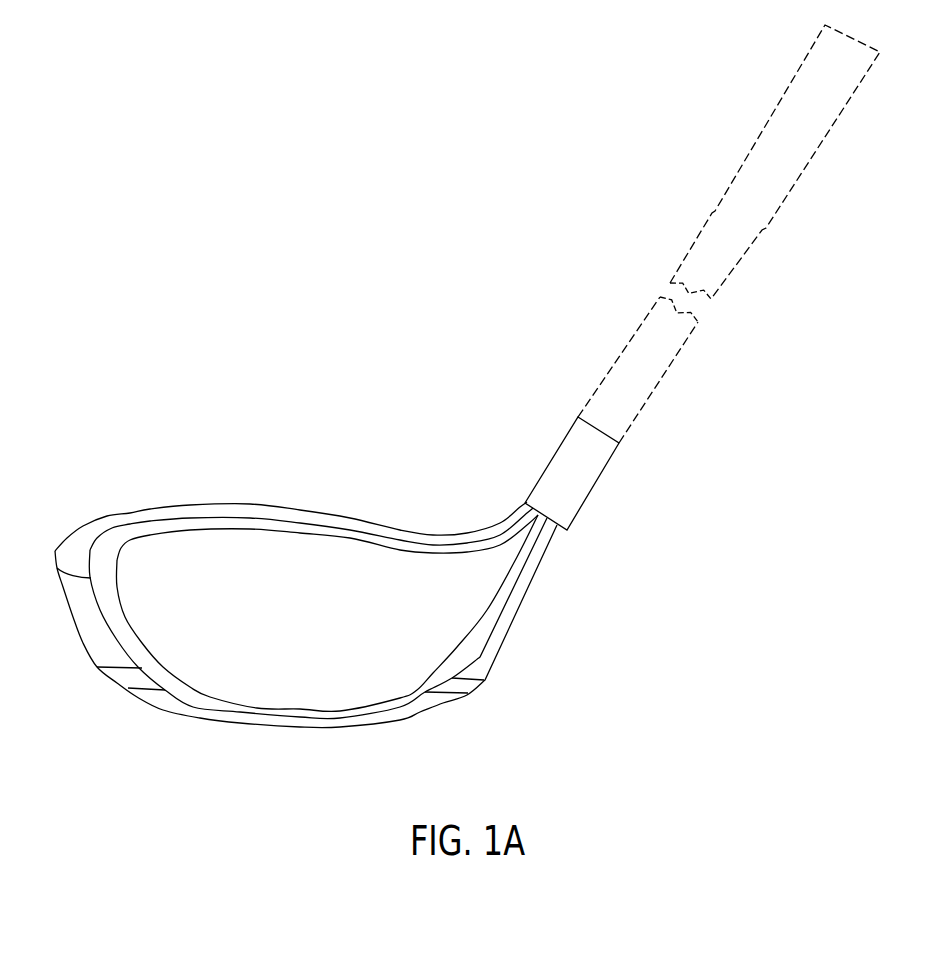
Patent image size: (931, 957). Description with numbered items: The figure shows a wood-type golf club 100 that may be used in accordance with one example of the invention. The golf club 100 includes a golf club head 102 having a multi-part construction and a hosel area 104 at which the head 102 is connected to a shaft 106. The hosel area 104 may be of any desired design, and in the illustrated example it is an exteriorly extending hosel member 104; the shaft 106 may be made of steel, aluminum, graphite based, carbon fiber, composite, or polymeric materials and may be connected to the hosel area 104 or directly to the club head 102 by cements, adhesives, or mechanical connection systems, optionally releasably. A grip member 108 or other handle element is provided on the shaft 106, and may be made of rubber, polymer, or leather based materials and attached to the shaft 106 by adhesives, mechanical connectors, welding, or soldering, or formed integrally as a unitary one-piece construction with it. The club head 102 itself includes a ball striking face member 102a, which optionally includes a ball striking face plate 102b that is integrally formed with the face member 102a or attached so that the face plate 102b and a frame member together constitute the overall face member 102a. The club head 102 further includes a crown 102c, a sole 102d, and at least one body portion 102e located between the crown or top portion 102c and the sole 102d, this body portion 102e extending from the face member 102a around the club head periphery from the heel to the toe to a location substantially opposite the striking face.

The golf club 100 is at (377, 288).
The golf club head 102 is at (237, 465).
The ball striking face member 102a is at (202, 528).
The ball striking face plate 102b is at (427, 608).
The crown 102c is at (260, 510).
The sole 102d is at (273, 727).
The body portion 102e is at (77, 558).
The hosel area 104 is at (563, 477).
The shaft 106 is at (677, 347).
The grip member 108 is at (772, 146).